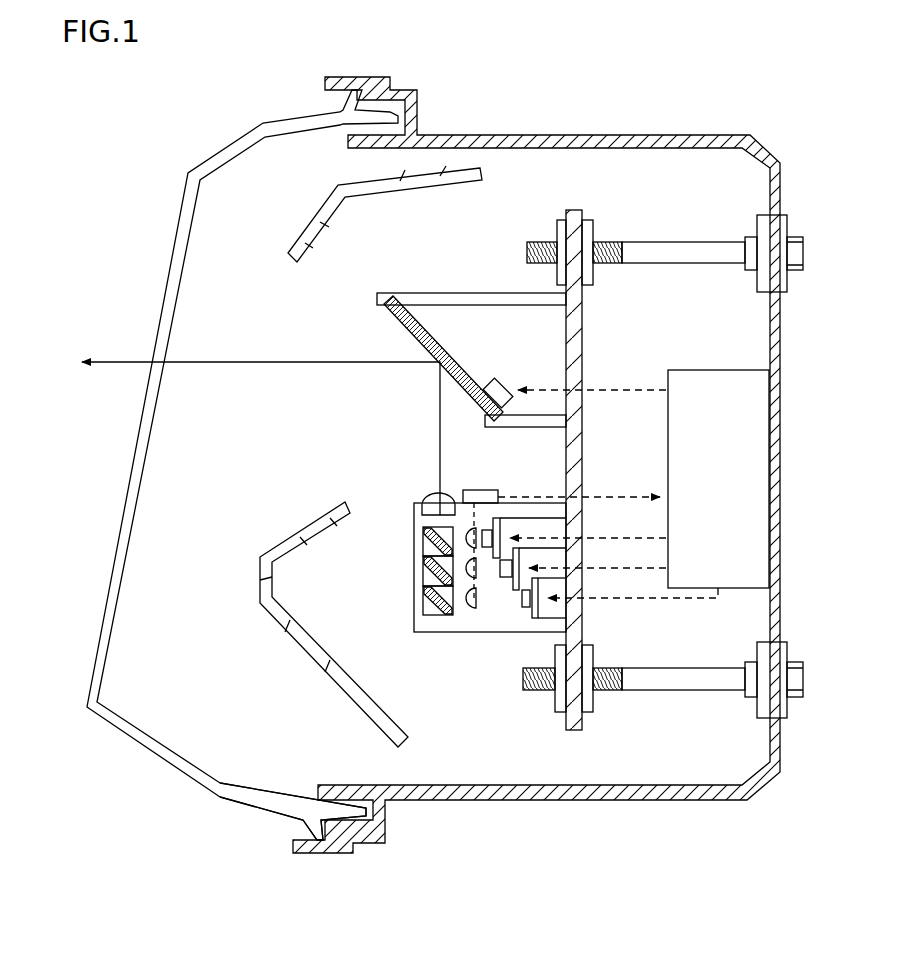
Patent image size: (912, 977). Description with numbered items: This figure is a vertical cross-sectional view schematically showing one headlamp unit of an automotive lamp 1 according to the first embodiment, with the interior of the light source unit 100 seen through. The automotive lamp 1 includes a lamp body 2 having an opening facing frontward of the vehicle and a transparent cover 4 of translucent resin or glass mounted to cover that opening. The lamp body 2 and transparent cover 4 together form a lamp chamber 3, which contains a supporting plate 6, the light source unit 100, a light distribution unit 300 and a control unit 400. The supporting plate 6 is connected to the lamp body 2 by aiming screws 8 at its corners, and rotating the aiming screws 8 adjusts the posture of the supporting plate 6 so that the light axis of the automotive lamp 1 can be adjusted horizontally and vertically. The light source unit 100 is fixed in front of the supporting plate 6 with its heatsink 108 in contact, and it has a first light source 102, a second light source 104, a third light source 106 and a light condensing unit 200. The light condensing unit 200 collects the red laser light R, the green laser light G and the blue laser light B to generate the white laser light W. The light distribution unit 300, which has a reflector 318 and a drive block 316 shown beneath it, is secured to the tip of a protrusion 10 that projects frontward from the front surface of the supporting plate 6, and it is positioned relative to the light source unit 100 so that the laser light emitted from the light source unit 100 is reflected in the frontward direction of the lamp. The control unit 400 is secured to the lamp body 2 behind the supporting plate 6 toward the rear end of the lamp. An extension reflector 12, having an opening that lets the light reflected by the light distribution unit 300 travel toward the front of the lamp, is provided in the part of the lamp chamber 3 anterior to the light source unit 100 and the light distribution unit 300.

The automotive lamp 1 is at (434, 944).
The lamp body 2 is at (702, 803).
The lamp chamber 3 is at (233, 763).
The transparent cover 4 is at (150, 752).
The supporting plate 6 is at (585, 213).
The aiming screws 8 is at (683, 240).
The protrusion 10 is at (470, 293).
The extension reflector 12 is at (318, 212).
The light source unit 100 is at (441, 636).
The first light source 102 is at (488, 560).
The second light source 104 is at (515, 592).
The third light source 106 is at (535, 620).
The heatsink 108 is at (553, 622).
The light condensing unit 200 is at (413, 595).
The light distribution unit 300 is at (410, 358).
The mirror drive block 316 is at (498, 380).
The reflector 318 is at (425, 345).
The control unit 400 is at (747, 369).
The white laser light W is at (440, 453).
The red laser light R is at (399, 535).
The green laser light G is at (399, 567).
The blue laser light B is at (459, 638).